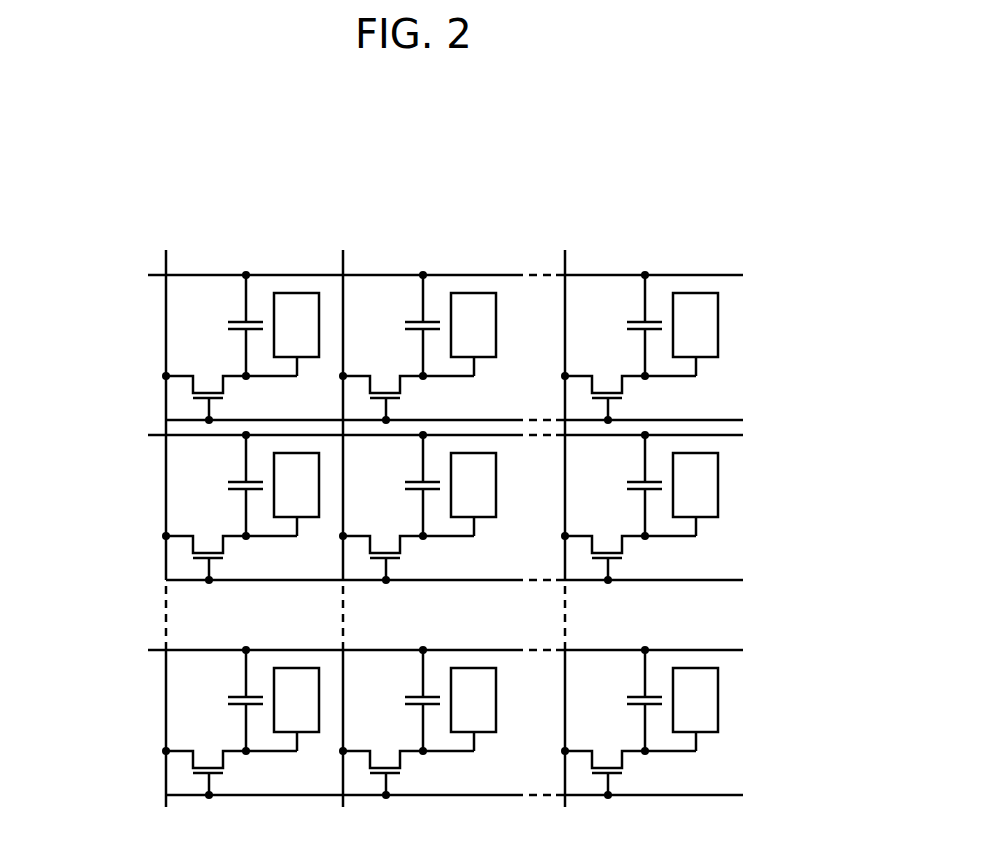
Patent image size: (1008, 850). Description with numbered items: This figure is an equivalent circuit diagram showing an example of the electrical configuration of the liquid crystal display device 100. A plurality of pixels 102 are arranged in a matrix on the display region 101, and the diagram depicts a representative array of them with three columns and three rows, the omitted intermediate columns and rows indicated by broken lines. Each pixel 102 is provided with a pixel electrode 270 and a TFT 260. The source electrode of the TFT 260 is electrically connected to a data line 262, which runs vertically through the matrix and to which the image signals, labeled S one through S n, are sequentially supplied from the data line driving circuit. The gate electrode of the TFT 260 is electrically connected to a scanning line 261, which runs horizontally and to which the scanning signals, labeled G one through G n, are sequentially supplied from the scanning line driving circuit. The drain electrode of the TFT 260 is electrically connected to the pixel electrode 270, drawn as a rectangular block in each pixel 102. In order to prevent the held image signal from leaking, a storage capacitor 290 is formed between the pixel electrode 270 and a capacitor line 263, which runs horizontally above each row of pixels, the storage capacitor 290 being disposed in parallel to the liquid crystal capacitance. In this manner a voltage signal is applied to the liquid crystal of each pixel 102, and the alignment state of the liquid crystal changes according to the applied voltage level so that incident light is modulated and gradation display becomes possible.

The liquid crystal display device 100 is at (569, 163).
The display region 101 is at (477, 232).
The pixel 102 is at (181, 328).
The TFT 260 is at (236, 400).
The scanning line 261 is at (162, 418).
The data line 262 is at (610, 230).
The capacitor line 263 is at (160, 275).
The pixel electrode 270 is at (297, 293).
The storage capacitor 290 is at (222, 325).